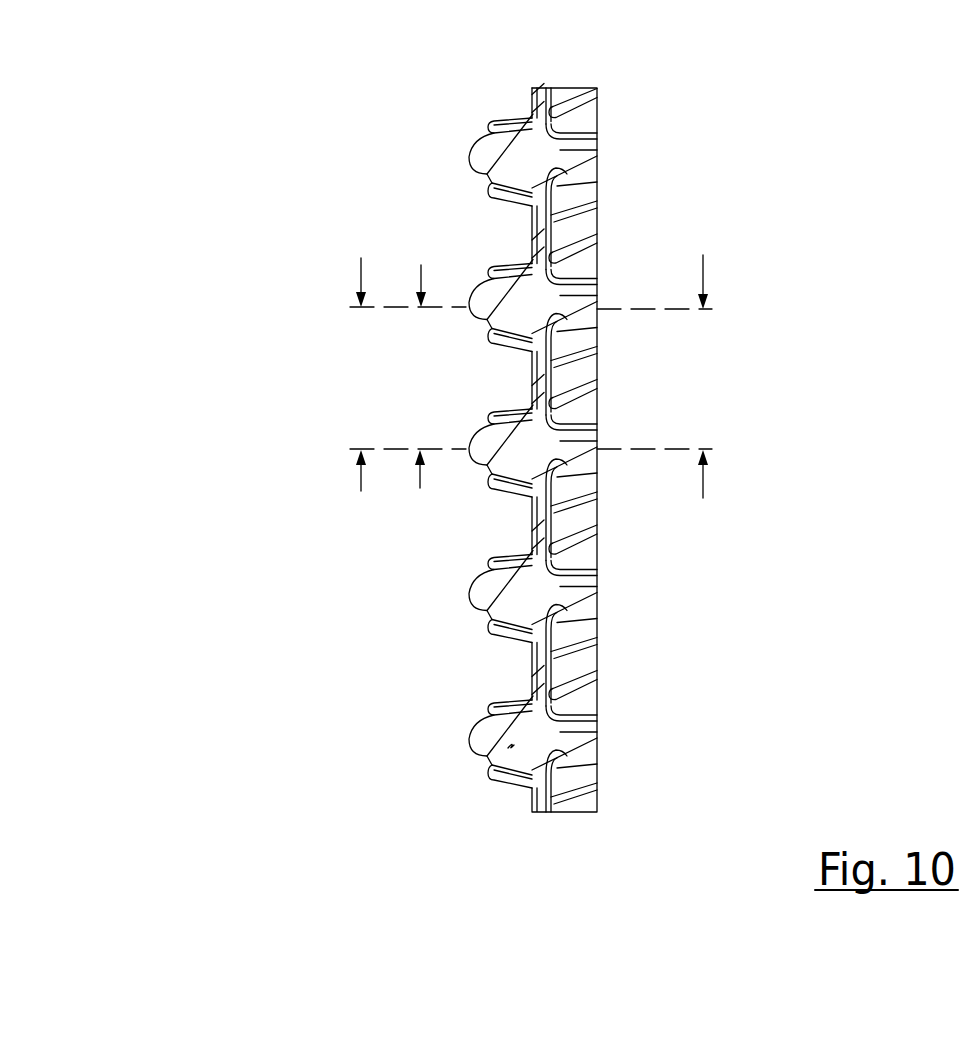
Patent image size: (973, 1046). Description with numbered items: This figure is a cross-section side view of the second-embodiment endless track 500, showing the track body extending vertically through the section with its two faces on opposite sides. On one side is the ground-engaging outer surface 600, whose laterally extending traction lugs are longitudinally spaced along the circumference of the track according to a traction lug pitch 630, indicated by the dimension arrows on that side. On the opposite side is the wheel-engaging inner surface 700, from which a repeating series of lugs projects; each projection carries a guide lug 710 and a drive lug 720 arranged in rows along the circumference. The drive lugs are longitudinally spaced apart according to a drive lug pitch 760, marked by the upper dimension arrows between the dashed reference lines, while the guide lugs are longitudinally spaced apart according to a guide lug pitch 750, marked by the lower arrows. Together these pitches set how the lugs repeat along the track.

The endless track 500 is at (435, 434).
The ground-engaging outer surface 600 is at (668, 107).
The traction lug pitch 630 is at (708, 494).
The wheel-engaging inner surface 700 is at (442, 452).
The guide lug 710 is at (492, 705).
The drive lug 720 is at (492, 760).
The guide lug pitch 750 is at (531, 490).
The drive lug pitch 760 is at (521, 266).